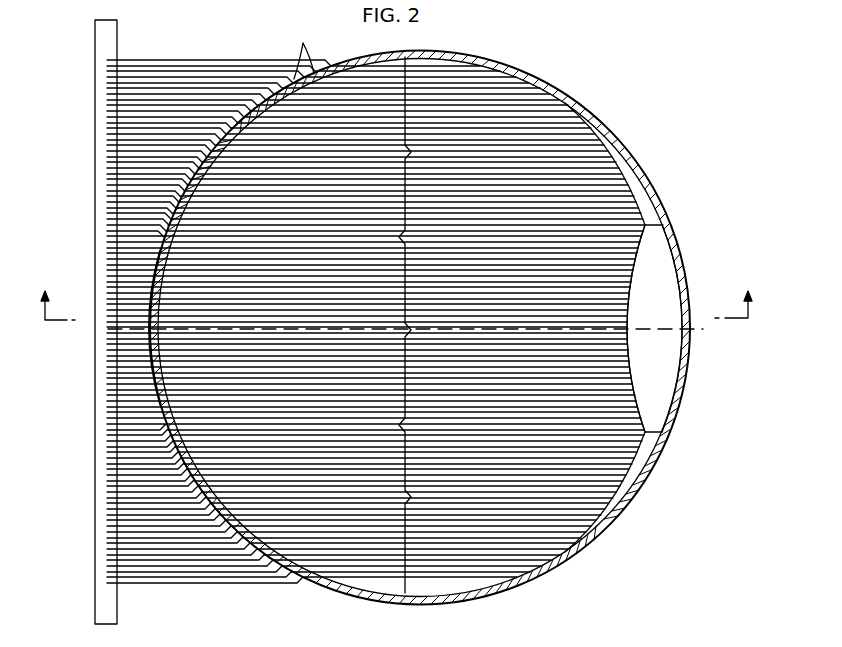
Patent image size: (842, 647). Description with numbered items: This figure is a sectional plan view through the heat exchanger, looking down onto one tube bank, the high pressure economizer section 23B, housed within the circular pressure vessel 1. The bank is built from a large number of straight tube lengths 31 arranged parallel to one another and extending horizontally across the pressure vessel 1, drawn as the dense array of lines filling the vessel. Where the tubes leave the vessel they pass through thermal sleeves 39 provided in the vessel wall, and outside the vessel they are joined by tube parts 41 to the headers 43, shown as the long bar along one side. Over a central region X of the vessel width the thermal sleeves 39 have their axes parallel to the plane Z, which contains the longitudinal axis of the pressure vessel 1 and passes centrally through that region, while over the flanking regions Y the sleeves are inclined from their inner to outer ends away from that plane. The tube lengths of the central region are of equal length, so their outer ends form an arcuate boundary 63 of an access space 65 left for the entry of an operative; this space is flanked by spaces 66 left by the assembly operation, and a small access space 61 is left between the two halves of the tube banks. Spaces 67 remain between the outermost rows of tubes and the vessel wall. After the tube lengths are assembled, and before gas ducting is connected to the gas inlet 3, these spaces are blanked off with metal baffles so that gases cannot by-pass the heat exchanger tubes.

The pressure vessel 1 is at (540, 80).
The gas inlet 3 is at (396, 297).
The high pressure economizer section 23B is at (553, 130).
The tube lengths 31 is at (368, 120).
The thermal sleeves 39 is at (299, 55).
The tube parts 41 is at (152, 86).
The headers 43 is at (113, 45).
The access space 61 is at (200, 333).
The arcuate boundary 63 is at (632, 392).
The access space 65 is at (657, 263).
The spaces 66 is at (638, 198).
The spaces 67 is at (418, 67).
The central region X is at (405, 331).
The flanking regions Y is at (414, 325).
The plane Z is at (672, 330).